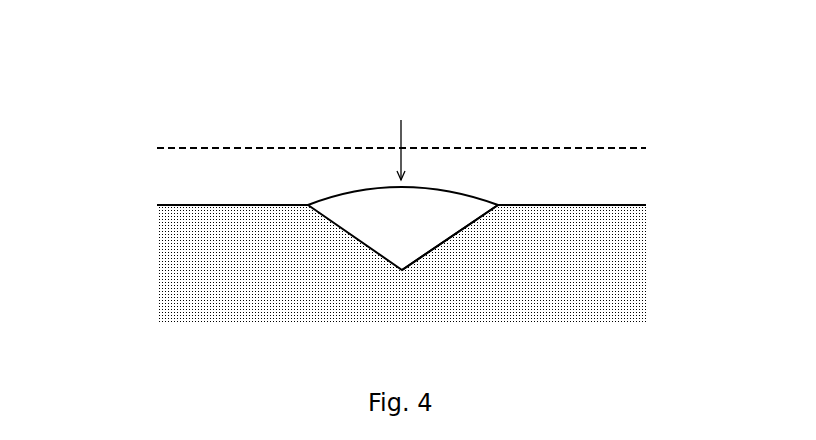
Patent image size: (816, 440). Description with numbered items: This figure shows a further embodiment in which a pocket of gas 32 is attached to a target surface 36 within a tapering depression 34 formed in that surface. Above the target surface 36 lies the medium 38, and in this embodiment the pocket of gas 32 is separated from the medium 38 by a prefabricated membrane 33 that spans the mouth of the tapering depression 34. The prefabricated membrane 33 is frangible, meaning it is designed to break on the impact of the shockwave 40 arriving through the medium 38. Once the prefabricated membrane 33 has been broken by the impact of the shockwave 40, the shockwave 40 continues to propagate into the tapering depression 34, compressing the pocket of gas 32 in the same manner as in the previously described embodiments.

The pocket of gas 32 is at (407, 245).
The prefabricated membrane 33 is at (388, 195).
The tapering depression 34 is at (465, 232).
The target surface 36 is at (205, 205).
The medium 38 is at (500, 124).
The shockwave 40 is at (222, 147).